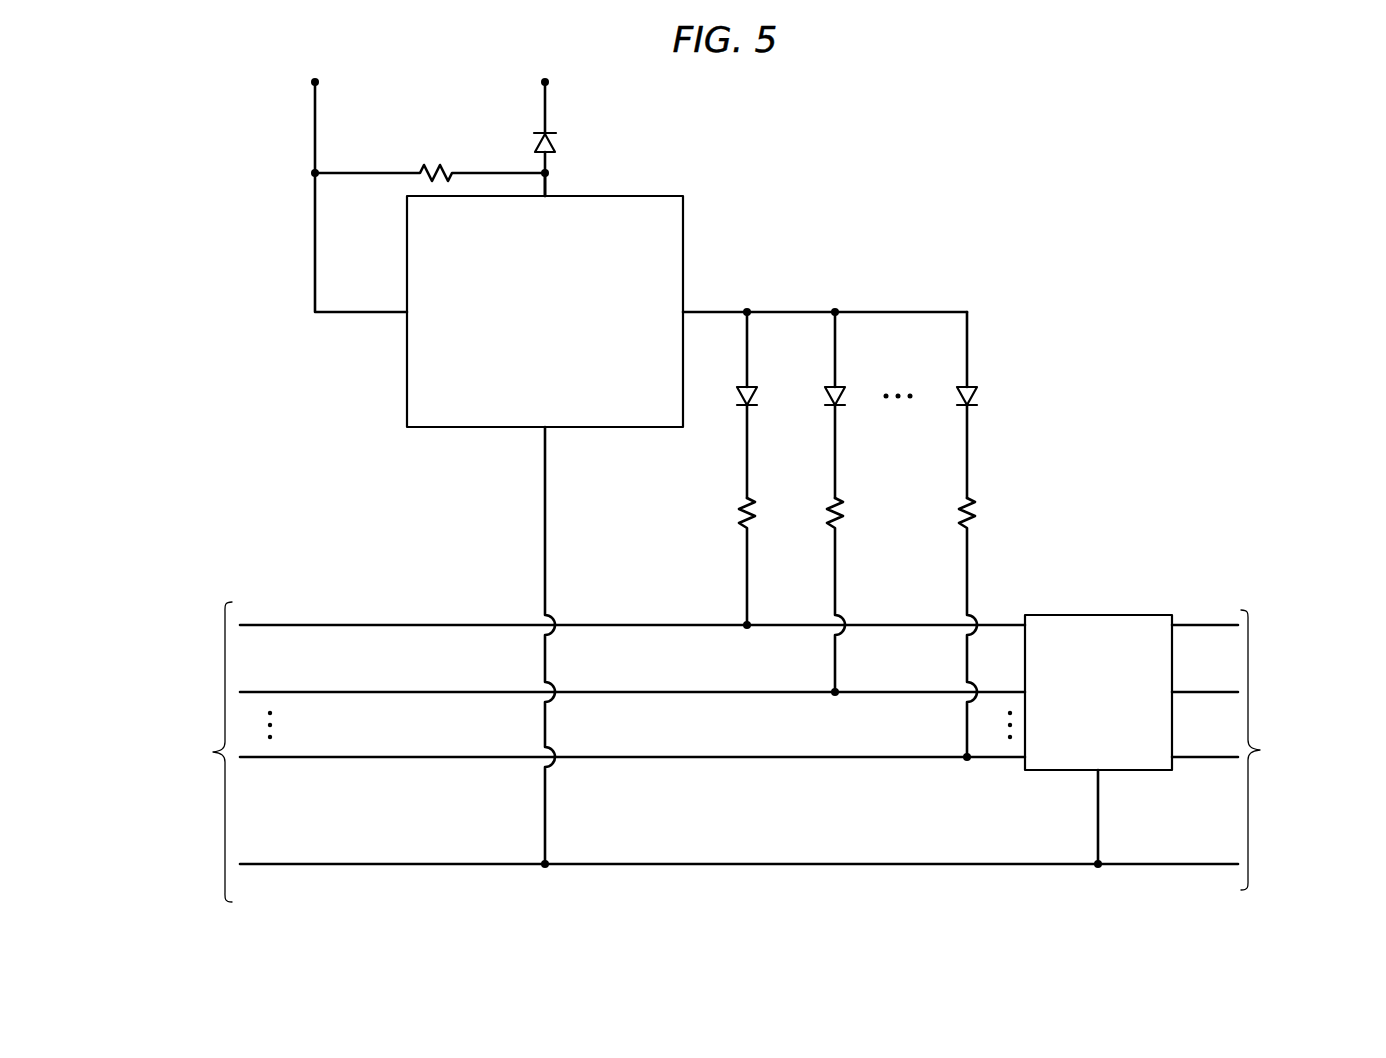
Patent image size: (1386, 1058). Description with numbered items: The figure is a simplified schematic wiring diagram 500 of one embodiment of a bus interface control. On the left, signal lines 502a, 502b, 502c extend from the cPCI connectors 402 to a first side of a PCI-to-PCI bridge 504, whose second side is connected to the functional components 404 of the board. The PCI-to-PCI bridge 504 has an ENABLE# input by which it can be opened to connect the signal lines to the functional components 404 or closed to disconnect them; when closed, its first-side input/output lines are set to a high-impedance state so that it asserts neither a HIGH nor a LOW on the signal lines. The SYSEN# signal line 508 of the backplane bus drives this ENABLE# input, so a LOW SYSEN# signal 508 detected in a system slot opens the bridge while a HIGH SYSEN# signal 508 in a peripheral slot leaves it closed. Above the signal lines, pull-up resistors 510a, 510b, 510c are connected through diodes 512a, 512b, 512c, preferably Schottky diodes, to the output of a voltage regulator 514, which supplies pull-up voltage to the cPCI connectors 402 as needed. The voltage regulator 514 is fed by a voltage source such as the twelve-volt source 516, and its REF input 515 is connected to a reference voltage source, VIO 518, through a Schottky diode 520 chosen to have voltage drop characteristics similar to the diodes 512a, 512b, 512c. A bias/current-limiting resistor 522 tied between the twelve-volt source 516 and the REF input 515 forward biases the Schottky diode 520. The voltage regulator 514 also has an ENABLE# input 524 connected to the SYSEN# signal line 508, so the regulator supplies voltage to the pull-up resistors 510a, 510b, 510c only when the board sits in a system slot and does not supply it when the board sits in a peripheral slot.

The schematic wiring diagram 500 is at (1068, 164).
The signal line 502a is at (318, 625).
The signal line 502b is at (345, 692).
The signal line 502c is at (368, 757).
The PCI-to-PCI bridge 504 is at (1133, 613).
The SYSEN# signal line 508 is at (395, 865).
The pull-up resistor 510a is at (738, 503).
The pull-up resistor 510b is at (840, 518).
The pull-up resistor 510c is at (977, 503).
The diode 512a is at (757, 388).
The diode 512b is at (845, 388).
The diode 512c is at (977, 388).
The voltage regulator 514 is at (686, 221).
The REF input 515 is at (548, 193).
The +12 volt source 516 is at (313, 90).
The VIO 518 is at (547, 90).
The Schottky diode 520 is at (556, 145).
The bias/current-limiting resistor 522 is at (434, 168).
The ENABLE# input 524 is at (543, 440).
The cPCI connectors 402 is at (147, 752).
The functional components 404 is at (1333, 792).